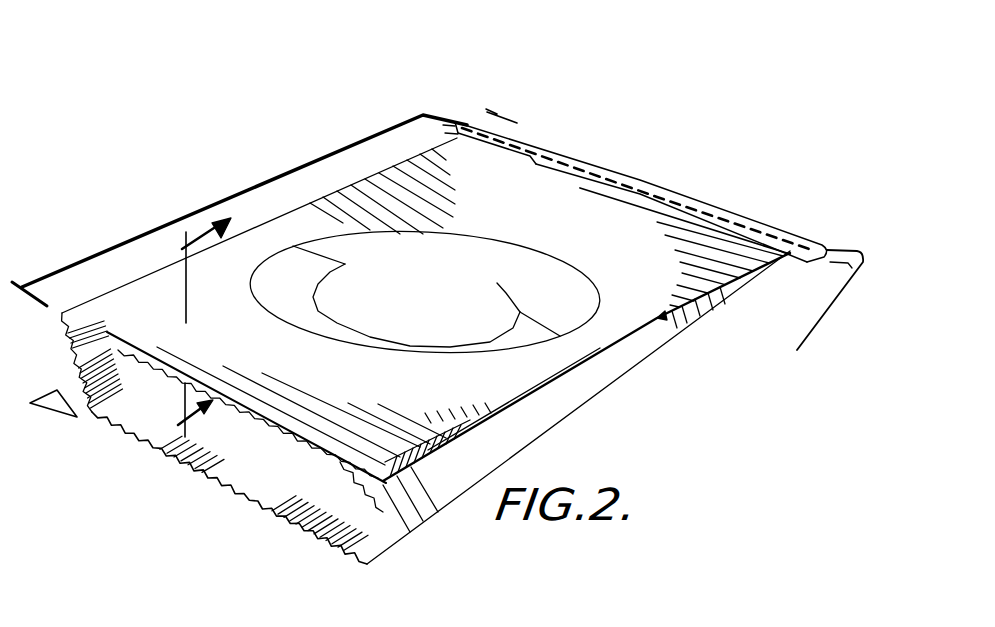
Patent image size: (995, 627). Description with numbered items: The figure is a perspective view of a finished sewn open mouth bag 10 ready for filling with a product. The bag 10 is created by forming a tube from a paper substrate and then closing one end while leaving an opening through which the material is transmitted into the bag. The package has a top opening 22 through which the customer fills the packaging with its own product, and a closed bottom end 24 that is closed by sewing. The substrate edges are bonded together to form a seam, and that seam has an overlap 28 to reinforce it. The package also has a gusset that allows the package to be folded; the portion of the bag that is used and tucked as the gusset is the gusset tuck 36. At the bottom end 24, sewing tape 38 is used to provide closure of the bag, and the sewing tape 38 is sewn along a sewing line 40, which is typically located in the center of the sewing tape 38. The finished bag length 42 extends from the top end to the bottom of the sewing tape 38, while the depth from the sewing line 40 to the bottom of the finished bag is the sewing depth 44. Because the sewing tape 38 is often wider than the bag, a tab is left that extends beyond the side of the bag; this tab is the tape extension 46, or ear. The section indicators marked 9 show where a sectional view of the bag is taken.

The reclosable package 10 is at (188, 193).
The first panel 22 is at (253, 478).
The zipper closure 24 is at (600, 168).
The second panel 28 is at (33, 405).
The side seal 36 is at (367, 523).
The zipper flange 38 is at (533, 150).
The slider 40 is at (672, 202).
The header 42 is at (401, 339).
The tether strip 44 is at (814, 315).
The end stop 46 is at (497, 114).
The section line 9- 9 is at (194, 330).